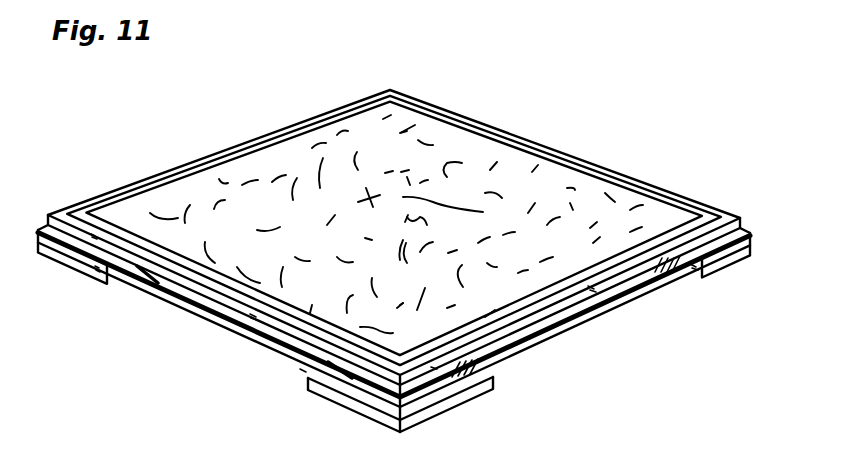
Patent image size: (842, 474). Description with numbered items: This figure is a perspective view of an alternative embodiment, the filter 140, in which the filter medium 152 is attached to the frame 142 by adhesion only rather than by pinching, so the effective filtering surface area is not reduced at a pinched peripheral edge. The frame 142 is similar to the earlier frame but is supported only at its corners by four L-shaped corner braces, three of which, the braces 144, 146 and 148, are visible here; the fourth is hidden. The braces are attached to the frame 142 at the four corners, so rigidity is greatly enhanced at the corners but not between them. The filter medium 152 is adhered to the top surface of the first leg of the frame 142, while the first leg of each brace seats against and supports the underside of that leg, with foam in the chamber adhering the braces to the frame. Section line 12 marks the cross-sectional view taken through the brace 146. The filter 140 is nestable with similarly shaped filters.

The filter 140 is at (618, 360).
The frame 142 is at (285, 345).
The corner brace 144 is at (83, 270).
The corner brace 146 is at (363, 410).
The corner brace 148 is at (722, 265).
The filter medium 152 is at (482, 151).
The section line 12- 12 is at (72, 195).